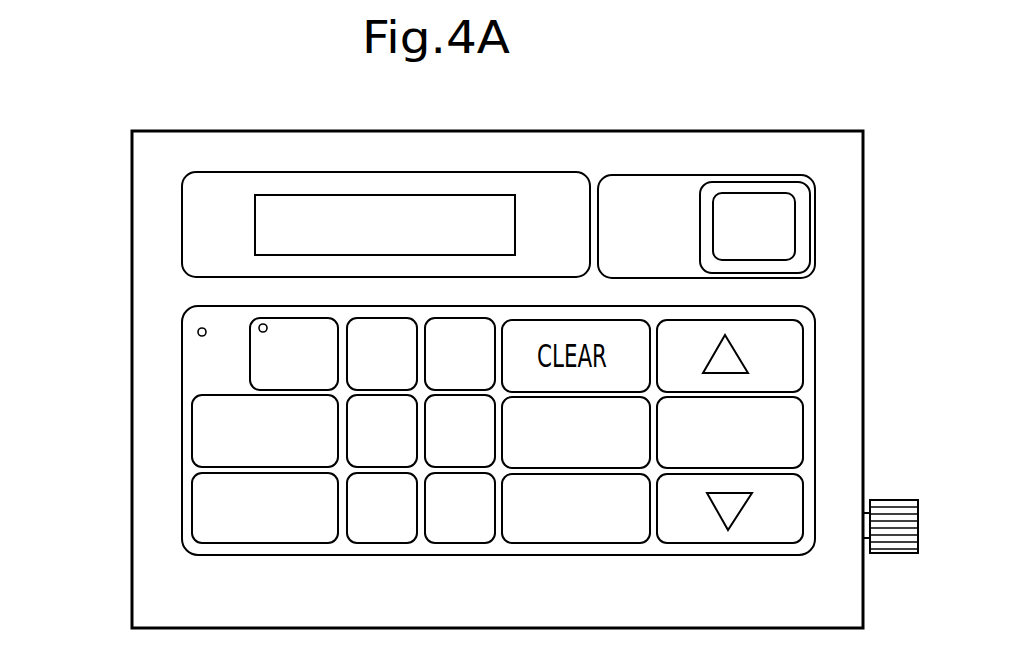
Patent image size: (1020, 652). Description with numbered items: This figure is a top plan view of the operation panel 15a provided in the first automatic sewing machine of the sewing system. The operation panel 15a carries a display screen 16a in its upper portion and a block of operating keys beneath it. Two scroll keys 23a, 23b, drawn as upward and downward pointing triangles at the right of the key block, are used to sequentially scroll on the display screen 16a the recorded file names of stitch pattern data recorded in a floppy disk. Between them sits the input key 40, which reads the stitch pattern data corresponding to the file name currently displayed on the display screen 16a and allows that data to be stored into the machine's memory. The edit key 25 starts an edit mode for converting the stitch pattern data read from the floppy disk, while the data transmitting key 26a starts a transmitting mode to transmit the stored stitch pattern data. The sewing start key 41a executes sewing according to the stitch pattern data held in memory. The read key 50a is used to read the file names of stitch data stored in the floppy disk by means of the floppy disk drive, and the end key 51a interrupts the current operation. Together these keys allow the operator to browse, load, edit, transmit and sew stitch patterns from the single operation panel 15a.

The operation panel 15a is at (132, 297).
The display screen 16a is at (302, 196).
The edit key 25 is at (287, 328).
The sewing start key 41a is at (197, 415).
The read key 50a is at (582, 457).
The scroll key 23a is at (790, 347).
The input key 40 is at (790, 425).
The scroll key 23b is at (703, 530).
The end key 51a is at (273, 532).
The data transmitting key 26a is at (380, 532).